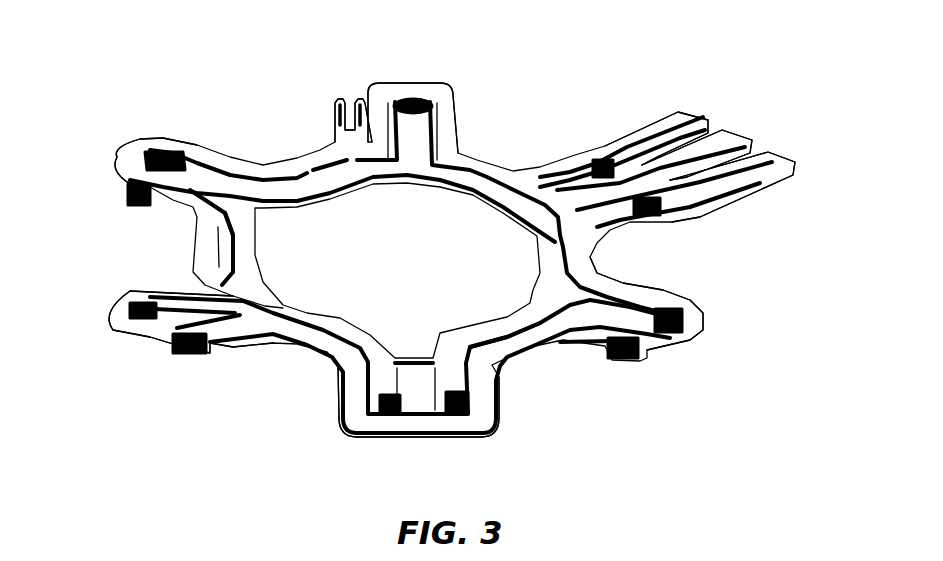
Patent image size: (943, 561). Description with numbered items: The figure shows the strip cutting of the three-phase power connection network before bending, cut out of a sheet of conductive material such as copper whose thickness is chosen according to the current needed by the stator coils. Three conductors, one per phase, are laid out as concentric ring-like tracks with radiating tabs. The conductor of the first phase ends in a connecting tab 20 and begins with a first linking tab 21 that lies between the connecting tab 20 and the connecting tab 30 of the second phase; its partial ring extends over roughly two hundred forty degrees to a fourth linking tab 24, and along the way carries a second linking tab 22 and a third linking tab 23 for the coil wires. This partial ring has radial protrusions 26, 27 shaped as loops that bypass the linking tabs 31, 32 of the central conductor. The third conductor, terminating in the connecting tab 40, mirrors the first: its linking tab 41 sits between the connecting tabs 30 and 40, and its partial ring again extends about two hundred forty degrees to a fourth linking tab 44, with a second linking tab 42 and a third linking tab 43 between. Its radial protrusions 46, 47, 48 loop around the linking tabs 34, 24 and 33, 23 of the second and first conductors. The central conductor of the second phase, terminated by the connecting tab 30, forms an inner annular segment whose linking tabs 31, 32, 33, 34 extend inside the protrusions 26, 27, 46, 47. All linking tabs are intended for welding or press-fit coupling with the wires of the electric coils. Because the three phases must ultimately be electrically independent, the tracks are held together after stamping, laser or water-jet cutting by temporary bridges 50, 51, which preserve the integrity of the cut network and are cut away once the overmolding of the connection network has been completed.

The connecting tab 20 is at (688, 120).
The first linking tab 21 is at (600, 170).
The second linking tab 22 is at (343, 113).
The third linking tab 23 is at (147, 330).
The fourth linking tab 24 is at (383, 390).
The radial protrusion 26 is at (392, 90).
The radial protrusion 27 is at (143, 145).
The connecting tab 30 is at (725, 147).
The linking tab 31 is at (417, 127).
The linking tab 32 is at (190, 157).
The linking tab 33 is at (453, 393).
The linking tab 34 is at (630, 310).
The connecting tab 40 is at (777, 163).
The linking tab 41 is at (667, 207).
The second linking tab 42 is at (610, 347).
The third linking tab 43 is at (207, 347).
The fourth linking tab 44 is at (140, 203).
The radial protrusion 46 is at (687, 330).
The radial protrusion 47 is at (423, 420).
The radial protrusion 48 is at (127, 300).
The bridge 50 is at (420, 363).
The bridge 51 is at (207, 247).